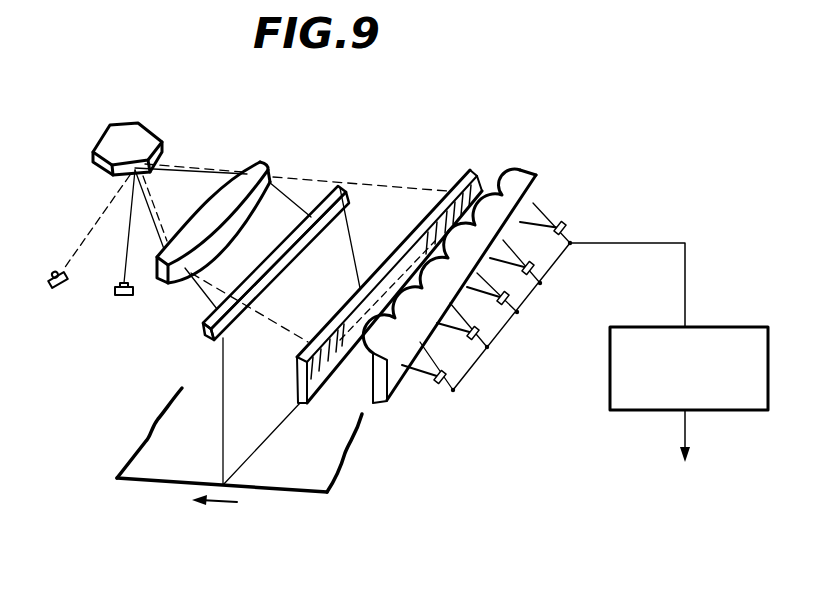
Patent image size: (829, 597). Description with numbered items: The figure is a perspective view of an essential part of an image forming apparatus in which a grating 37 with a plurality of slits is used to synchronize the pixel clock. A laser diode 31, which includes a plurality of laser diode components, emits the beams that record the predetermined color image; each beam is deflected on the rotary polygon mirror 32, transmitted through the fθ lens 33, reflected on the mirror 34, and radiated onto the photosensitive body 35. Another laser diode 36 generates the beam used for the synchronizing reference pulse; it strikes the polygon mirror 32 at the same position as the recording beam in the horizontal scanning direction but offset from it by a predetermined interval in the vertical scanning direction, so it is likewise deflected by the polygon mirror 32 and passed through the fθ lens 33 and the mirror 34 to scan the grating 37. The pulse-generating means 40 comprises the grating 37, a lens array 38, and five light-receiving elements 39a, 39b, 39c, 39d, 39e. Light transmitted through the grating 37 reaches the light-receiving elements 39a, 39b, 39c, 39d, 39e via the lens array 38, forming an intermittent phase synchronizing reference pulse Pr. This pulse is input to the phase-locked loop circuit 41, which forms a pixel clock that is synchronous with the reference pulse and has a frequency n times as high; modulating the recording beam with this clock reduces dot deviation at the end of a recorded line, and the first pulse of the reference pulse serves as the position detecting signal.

The laser diode 31 is at (128, 297).
The polygon mirror 32 is at (143, 134).
The fθ lens 33 is at (248, 168).
The mirror 34 is at (309, 218).
The photosensitive body 35 is at (300, 462).
The laser diode 36 is at (57, 288).
The grating 37 is at (417, 228).
The lens array 38 is at (487, 209).
The light-receiving element 39a is at (437, 383).
The light-receiving element 39b is at (470, 341).
The light-receiving element 39c is at (500, 306).
The light-receiving element 39d is at (527, 274).
The light-receiving element 39e is at (560, 236).
The pulse-generating means 40 is at (573, 208).
The phase-locked loop circuit 41 is at (707, 326).